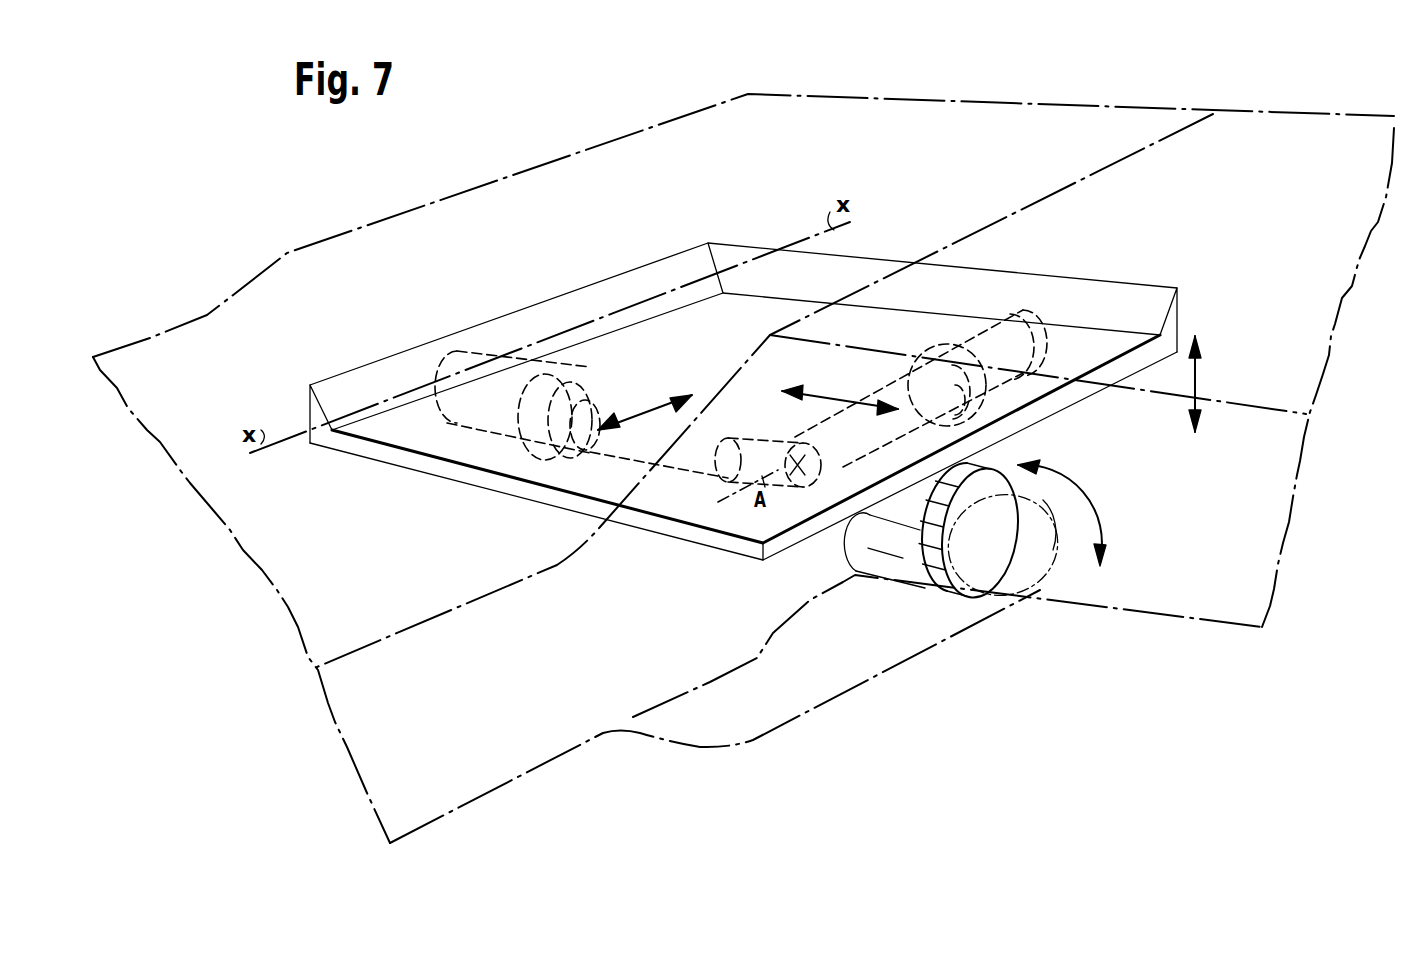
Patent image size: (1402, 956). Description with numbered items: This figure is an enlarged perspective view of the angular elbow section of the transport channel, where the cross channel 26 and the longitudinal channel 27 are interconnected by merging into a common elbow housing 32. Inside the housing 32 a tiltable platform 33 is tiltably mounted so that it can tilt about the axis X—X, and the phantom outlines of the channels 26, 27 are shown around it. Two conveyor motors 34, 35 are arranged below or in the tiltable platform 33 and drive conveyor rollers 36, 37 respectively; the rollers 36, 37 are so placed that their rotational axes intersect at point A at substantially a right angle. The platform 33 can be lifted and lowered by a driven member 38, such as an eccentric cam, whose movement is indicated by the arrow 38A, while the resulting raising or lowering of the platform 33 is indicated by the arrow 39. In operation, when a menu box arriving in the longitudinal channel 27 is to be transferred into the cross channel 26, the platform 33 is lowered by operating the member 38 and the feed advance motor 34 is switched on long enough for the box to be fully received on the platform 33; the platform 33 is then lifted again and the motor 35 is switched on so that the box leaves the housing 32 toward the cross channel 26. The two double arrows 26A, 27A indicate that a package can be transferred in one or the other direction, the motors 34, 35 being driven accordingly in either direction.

The cross channel 26 is at (1250, 112).
The longitudinal channel 27 is at (167, 330).
The elbow housing 32 is at (743, 316).
The tiltable platform 33 is at (733, 257).
The conveyor motor 34 is at (575, 368).
The conveyor motor 35 is at (1020, 330).
The conveyor roller 36 is at (613, 410).
The conveyor roller 37 is at (891, 388).
The double arrow 26A is at (820, 398).
The double arrow 27A is at (637, 415).
The driven member 38 is at (980, 557).
The arrow 38A is at (1085, 497).
The arrow 39 is at (1197, 374).